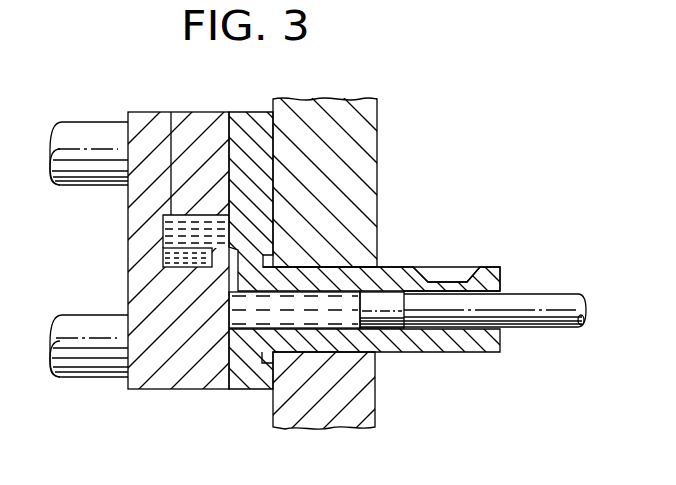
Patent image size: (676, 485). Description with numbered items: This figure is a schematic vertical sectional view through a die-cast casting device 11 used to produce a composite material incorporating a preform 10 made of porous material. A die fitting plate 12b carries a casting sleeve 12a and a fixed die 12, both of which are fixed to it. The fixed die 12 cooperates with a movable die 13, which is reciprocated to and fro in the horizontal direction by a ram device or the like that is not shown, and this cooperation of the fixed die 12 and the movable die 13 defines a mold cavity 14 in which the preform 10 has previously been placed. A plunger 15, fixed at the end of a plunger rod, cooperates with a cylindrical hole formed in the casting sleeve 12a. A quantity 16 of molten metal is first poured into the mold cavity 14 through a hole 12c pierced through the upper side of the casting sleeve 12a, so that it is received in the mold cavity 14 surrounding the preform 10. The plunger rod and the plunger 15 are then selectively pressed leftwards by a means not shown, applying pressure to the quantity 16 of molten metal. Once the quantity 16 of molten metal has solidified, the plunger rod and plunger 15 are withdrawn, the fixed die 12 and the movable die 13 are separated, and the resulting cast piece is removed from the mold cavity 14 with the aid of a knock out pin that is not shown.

The preform 10 is at (160, 254).
The die-cast casting device 11 is at (381, 134).
The fixed die 12 is at (253, 119).
The casting sleeve 12a is at (395, 276).
The die fitting plate 12b is at (343, 417).
The hole 12c is at (451, 273).
The movable die 13 is at (208, 121).
The mold cavity 14 is at (175, 216).
The plunger 15 is at (397, 323).
The quantity of molten metal 16 is at (248, 318).